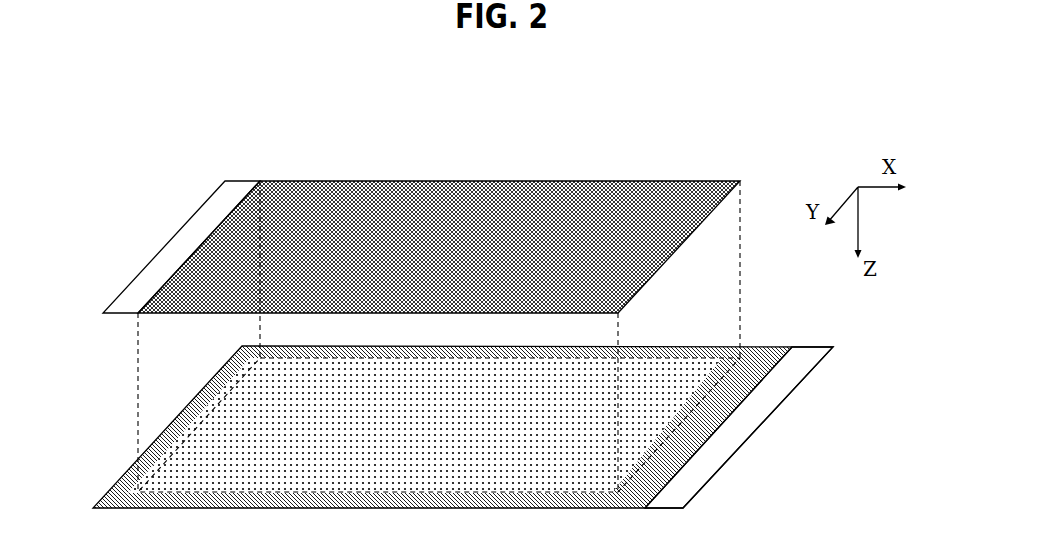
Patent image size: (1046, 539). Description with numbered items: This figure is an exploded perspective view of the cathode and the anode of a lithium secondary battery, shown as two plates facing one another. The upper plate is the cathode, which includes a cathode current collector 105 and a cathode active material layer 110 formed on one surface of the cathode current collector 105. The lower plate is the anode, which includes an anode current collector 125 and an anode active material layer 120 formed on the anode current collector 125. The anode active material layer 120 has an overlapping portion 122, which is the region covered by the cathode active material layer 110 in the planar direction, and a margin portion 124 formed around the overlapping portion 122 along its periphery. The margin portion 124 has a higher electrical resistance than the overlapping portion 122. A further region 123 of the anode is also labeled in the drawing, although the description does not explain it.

The cathode current collector 105 is at (218, 202).
The cathode active material layer 110 is at (701, 192).
The anode active material layer 120 is at (702, 365).
The overlapping portion 122 is at (600, 473).
The electrode pattern layer 123 is at (702, 407).
The margin portion 124 is at (680, 443).
The anode current collector 125 is at (780, 374).